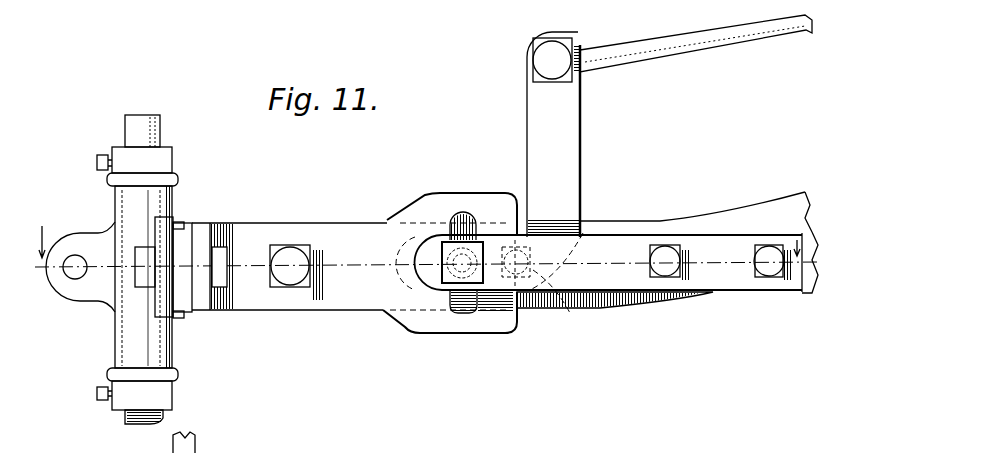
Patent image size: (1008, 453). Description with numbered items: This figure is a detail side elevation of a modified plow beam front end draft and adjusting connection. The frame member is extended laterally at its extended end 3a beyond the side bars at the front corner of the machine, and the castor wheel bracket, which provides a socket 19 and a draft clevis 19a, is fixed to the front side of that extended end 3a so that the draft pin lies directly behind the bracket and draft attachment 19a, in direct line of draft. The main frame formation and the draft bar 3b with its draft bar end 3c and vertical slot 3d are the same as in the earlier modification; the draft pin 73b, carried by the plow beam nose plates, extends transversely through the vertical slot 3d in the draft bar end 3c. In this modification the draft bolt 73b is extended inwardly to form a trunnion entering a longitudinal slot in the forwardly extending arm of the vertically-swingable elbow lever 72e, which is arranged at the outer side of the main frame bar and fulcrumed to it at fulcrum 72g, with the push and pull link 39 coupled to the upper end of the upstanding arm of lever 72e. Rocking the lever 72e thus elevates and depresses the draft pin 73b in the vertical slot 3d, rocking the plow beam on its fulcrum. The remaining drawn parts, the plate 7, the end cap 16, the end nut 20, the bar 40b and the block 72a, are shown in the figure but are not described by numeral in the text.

The laterally extended end 3a is at (183, 233).
The draft bar 3b is at (257, 312).
The draft bar end 3c is at (412, 313).
The vertical slot 3d is at (458, 213).
The plate 7 is at (700, 217).
The end cap 16 is at (810, 297).
The socket 19 is at (132, 338).
The draft clevis 19a is at (82, 290).
The end nut 20 is at (125, 417).
The push and pull link 39 is at (668, 42).
The bar 40b is at (623, 278).
The block 72a is at (425, 228).
The elbow lever 72e is at (572, 154).
The fulcrum 72g is at (577, 307).
The draft pin 73b is at (505, 248).